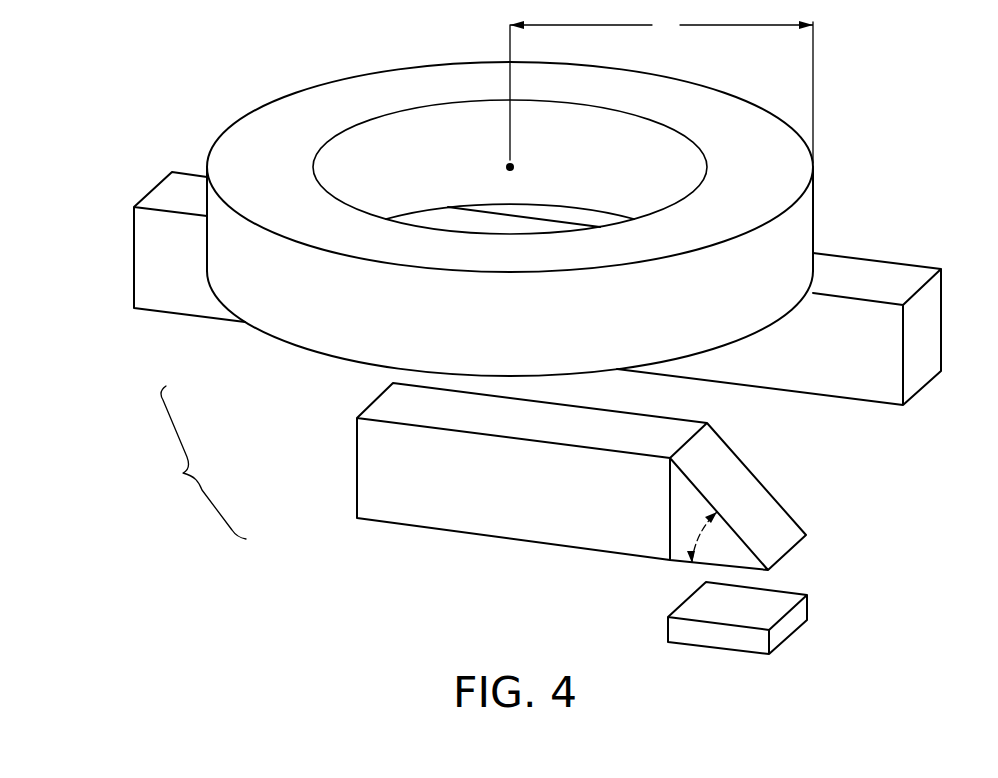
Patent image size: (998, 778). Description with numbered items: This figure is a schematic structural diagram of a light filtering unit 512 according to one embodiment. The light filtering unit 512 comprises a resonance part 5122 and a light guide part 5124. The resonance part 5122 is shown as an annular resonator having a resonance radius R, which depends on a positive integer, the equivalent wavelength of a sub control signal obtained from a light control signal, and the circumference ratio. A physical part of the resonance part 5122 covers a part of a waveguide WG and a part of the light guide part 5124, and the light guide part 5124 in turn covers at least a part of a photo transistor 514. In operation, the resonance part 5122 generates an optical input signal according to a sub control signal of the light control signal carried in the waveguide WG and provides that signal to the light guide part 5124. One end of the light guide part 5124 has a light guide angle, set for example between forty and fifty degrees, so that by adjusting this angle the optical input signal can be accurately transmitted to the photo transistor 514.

The light filtering unit 512 is at (194, 462).
The resonance part 5122 is at (322, 313).
The light guide part 5124 is at (378, 495).
The photo transistor 514 is at (787, 623).
The waveguide WG is at (880, 280).
The resonance radius R is at (659, 92).